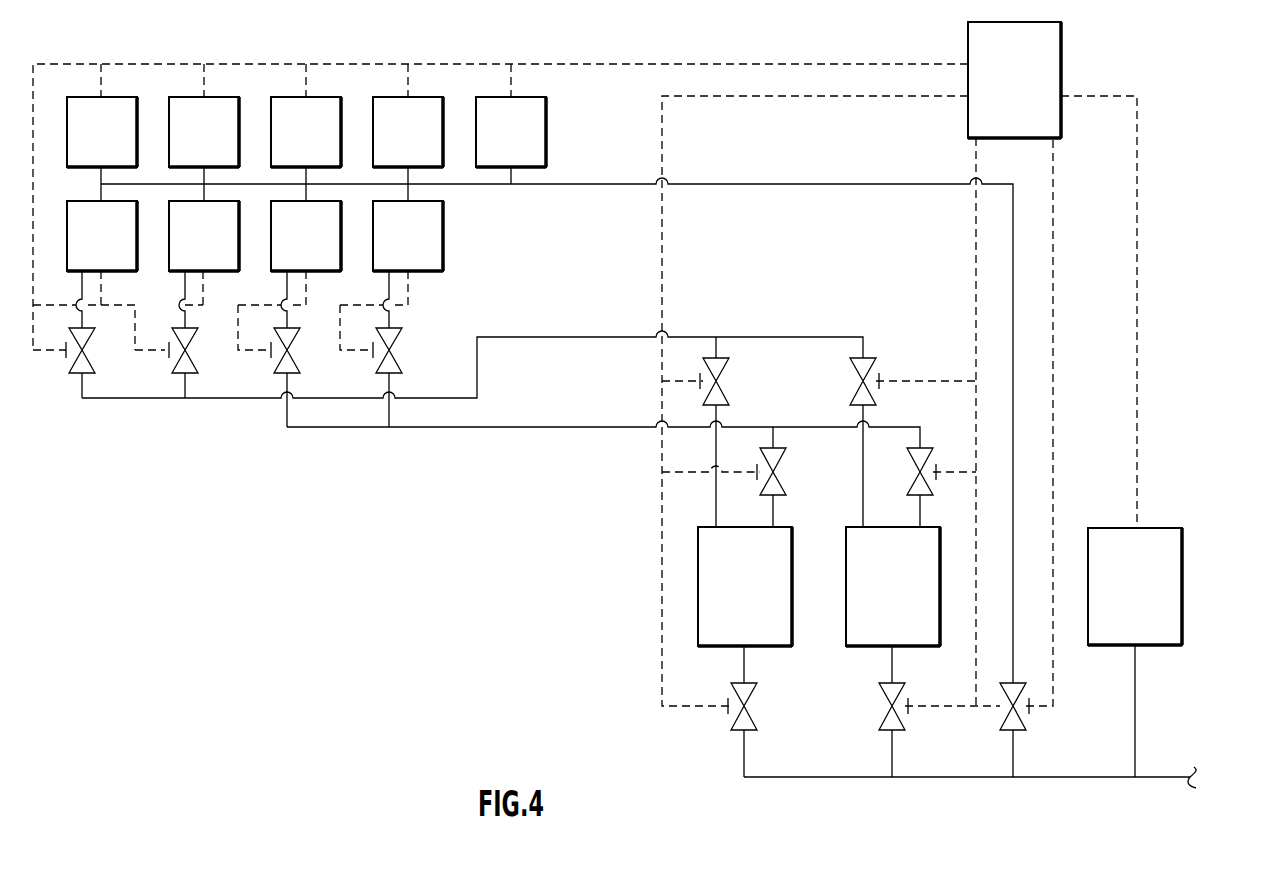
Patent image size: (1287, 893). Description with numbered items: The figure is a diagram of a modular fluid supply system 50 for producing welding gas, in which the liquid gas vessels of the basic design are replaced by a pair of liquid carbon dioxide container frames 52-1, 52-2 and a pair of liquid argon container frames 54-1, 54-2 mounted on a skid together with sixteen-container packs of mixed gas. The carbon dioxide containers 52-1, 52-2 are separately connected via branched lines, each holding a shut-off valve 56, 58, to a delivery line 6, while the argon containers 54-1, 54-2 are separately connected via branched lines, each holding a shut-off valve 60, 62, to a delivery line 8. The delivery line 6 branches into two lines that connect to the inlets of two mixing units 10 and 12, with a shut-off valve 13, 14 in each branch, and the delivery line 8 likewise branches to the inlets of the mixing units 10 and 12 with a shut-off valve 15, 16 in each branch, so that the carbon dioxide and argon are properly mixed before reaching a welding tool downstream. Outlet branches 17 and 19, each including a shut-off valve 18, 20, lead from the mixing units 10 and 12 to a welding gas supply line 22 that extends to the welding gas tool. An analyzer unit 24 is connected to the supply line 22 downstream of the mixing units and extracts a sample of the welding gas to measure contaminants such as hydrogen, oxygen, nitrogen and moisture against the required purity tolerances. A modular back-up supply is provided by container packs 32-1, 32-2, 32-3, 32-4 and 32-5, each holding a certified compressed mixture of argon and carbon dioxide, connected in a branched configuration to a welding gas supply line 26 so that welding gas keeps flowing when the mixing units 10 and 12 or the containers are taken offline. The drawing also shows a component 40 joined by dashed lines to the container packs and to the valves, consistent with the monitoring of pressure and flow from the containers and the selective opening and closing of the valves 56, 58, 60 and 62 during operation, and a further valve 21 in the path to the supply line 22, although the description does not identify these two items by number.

The delivery line 6 is at (533, 337).
The delivery line 8 is at (518, 427).
The mixing unit 10 is at (736, 598).
The mixing unit 12 is at (884, 598).
The shut-off valve 13 is at (722, 378).
The shut-off valve 14 is at (872, 374).
The shut-off valve 15 is at (778, 484).
The shut-off valve 16 is at (912, 480).
The outlet branch 17 is at (746, 665).
The shut-off valve 18 is at (752, 713).
The outlet branch 19 is at (892, 665).
The shut-off valve 20 is at (886, 698).
The valve 21 is at (1005, 698).
The welding gas supply line 22 is at (960, 777).
The analyzer unit 24 is at (1126, 598).
The welding gas supply line 26 is at (575, 184).
The container pack 32-1 is at (85, 141).
The container pack 32-2 is at (187, 141).
The container pack 32-3 is at (289, 141).
The container pack 32-4 is at (391, 141).
The container pack 32-5 is at (494, 141).
The controller 40 is at (1004, 91).
The modular system 50 is at (1188, 100).
The CO2 container frame 52-1 is at (85, 245).
The CO2 container frame 52-2 is at (187, 245).
The Ar container frame 54-1 is at (289, 245).
The Ar container frame 54-2 is at (391, 245).
The shut-off valve 56 is at (93, 366).
The shut-off valve 58 is at (196, 366).
The shut-off valve 60 is at (298, 366).
The shut-off valve 62 is at (400, 362).